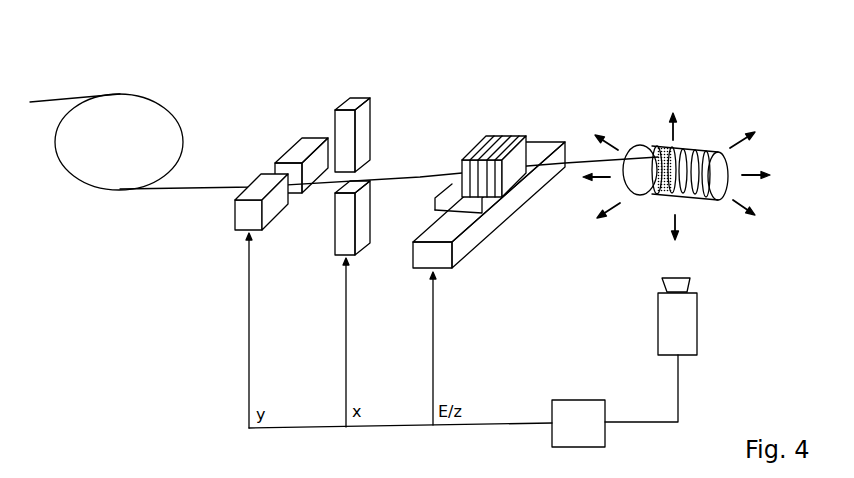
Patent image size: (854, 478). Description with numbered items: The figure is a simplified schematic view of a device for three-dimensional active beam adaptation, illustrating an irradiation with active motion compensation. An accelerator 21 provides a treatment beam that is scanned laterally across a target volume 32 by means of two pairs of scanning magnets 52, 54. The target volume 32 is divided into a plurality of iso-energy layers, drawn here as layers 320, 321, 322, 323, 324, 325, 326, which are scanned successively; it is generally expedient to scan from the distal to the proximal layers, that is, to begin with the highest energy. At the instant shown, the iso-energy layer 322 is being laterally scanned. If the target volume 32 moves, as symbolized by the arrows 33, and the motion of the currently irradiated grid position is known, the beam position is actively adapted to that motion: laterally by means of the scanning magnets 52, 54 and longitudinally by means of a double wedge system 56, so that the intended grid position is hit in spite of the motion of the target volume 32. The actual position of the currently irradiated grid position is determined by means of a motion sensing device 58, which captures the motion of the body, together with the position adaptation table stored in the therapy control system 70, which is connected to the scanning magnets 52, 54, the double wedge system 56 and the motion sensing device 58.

The accelerator 21 is at (147, 97).
The scanning magnets 54 is at (288, 157).
The scanning magnets 52 is at (353, 97).
The double wedge system 56 is at (503, 135).
The target volume 32 is at (683, 164).
The arrows 33 is at (740, 205).
The iso-energy layer 320 is at (720, 172).
The iso-energy layer 321 is at (710, 150).
The iso-energy layer 322 is at (693, 152).
The iso-energy layer 323 is at (678, 143).
The iso-energy layer 324 is at (660, 145).
The yarn body section 325 is at (643, 145).
The yarn body section 326 is at (627, 145).
The motion sensing device 58 is at (697, 328).
The therapy control system 70 is at (590, 435).